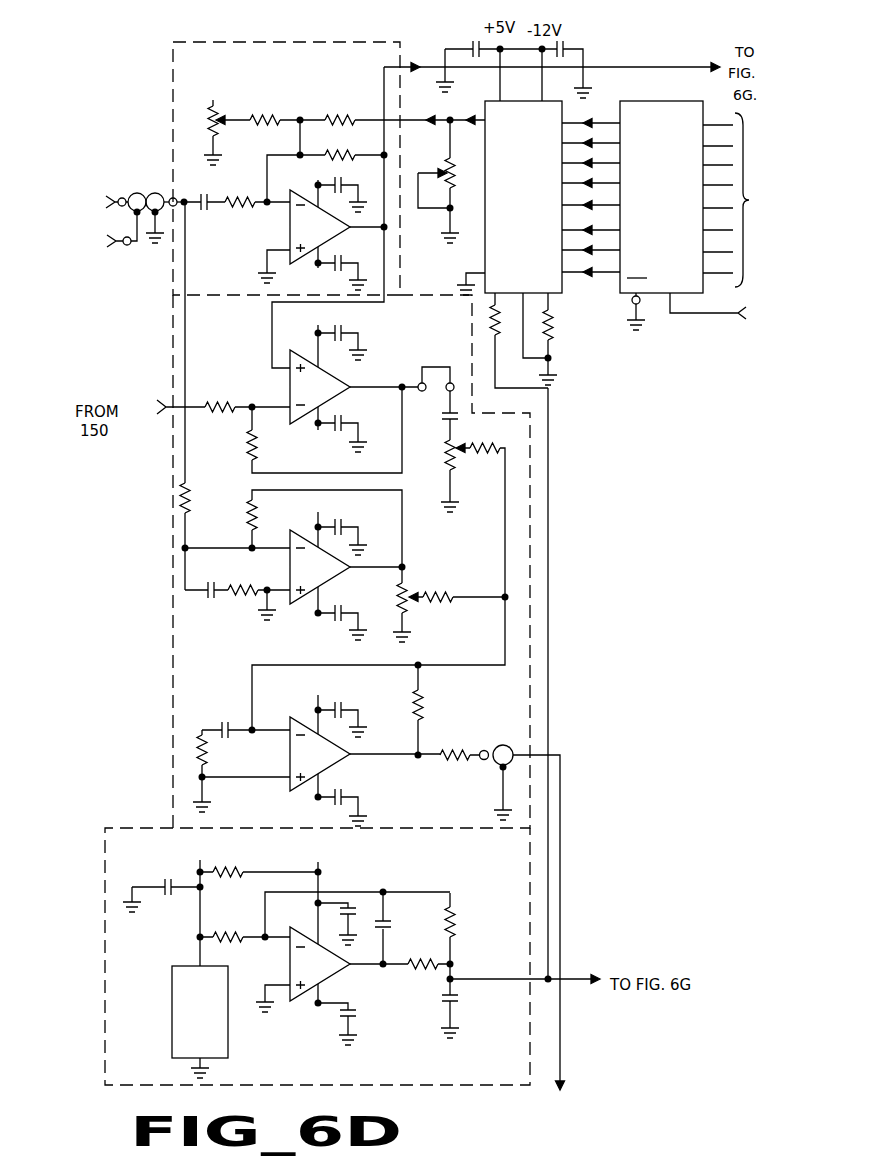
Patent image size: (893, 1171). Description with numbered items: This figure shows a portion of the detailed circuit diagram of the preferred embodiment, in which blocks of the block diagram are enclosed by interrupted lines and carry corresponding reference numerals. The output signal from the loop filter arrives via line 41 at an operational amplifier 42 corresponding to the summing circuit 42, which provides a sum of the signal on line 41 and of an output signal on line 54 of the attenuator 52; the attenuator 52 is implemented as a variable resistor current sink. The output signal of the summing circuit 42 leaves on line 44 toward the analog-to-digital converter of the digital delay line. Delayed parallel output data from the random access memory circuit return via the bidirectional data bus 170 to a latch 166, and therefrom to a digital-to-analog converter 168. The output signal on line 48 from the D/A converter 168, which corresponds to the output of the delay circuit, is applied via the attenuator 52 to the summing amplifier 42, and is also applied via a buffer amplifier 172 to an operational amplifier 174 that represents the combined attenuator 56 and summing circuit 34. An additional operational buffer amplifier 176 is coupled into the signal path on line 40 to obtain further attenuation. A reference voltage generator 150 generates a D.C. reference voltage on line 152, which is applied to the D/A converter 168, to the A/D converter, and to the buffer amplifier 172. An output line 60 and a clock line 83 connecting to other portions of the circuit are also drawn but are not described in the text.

The summing circuit 34 is at (309, 561).
The attenuator 56 is at (181, 652).
The summing circuit 42 is at (209, 50).
The output line 44 is at (412, 64).
The line 41 is at (112, 248).
The line 40 is at (187, 328).
The line 152 is at (172, 404).
The buffer amplifier 172 is at (352, 375).
The operational buffer amplifier 176 is at (305, 534).
The operational amplifier 174 is at (306, 721).
The reference voltage generator 150 is at (138, 828).
The output line 60 is at (563, 1070).
The output line of attenuator 54 is at (416, 119).
The output line of D/A converter 48 is at (481, 116).
The attenuator 52 is at (451, 181).
The digital-to-analog converter 168 is at (523, 107).
The latch 166 is at (645, 107).
The bidirectional data bus 170 is at (743, 200).
The clock line 83 is at (702, 318).